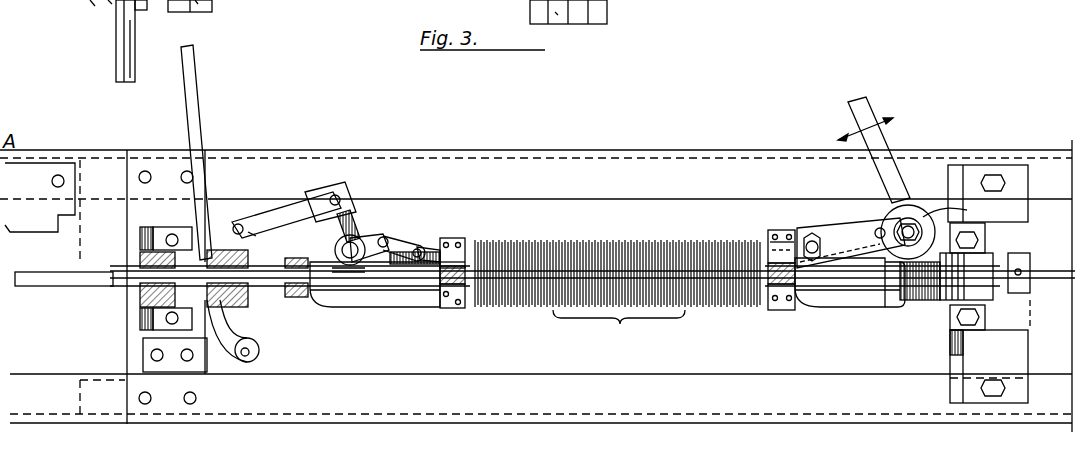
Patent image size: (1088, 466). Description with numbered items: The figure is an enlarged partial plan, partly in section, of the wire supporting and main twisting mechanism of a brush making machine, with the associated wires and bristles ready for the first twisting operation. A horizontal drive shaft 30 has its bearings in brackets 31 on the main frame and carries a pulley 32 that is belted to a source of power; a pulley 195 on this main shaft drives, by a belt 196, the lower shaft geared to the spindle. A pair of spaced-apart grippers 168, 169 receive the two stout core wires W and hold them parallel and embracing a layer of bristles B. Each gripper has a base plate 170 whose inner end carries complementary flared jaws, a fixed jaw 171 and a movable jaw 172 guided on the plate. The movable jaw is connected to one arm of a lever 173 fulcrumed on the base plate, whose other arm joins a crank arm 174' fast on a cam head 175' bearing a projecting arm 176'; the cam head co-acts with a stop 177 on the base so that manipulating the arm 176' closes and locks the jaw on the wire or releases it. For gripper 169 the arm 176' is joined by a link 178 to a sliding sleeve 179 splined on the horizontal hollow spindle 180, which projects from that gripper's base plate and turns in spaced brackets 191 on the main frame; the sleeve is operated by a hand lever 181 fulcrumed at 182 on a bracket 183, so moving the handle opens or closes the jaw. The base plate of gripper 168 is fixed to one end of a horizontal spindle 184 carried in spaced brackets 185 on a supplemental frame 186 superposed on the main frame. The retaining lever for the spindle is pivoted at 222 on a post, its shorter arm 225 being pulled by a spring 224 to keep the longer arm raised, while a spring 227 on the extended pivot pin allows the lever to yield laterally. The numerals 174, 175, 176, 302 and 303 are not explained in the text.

The horizontal drive shaft 30 is at (360, 0).
The brackets 31 is at (196, 2).
The pulley 32 is at (607, 12).
The wire gripper 168 is at (775, 228).
The wire gripper 169 is at (463, 238).
The base plate 170 is at (417, 302).
The fixed jaw 171 is at (460, 297).
The movable jaw 172 is at (458, 240).
The lever 173 is at (848, 237).
The lever hub 174 is at (922, 187).
The crank arm 174' is at (395, 185).
The cam 175 is at (668, 202).
The cam head 175' is at (236, 285).
The hand lever 176 is at (878, 144).
The projecting arm 176' is at (346, 179).
The stop 177 is at (357, 268).
The link 178 is at (300, 205).
The sliding sleeve 179 is at (273, 240).
The horizontal hollow spindle 180 is at (12, 292).
The hand lever 181 is at (193, 99).
The fulcrum 182 is at (253, 364).
The bracket 183 is at (270, 0).
The horizontal spindle 184 is at (1050, 275).
The brackets 185 is at (955, 273).
The supplemental frame 186 is at (972, 173).
The brackets 191 is at (173, 160).
The pulley 195 is at (118, 80).
The belt 196 is at (118, 68).
The pivot pin 222 is at (92, 2).
The spring 224 is at (146, 8).
The shorter arm 225 is at (110, 2).
The spring 227 is at (185, 10).
The member 302 is at (213, 5).
The member 303 is at (215, 10).
The core wires W is at (595, 270).
The bristles B is at (619, 329).